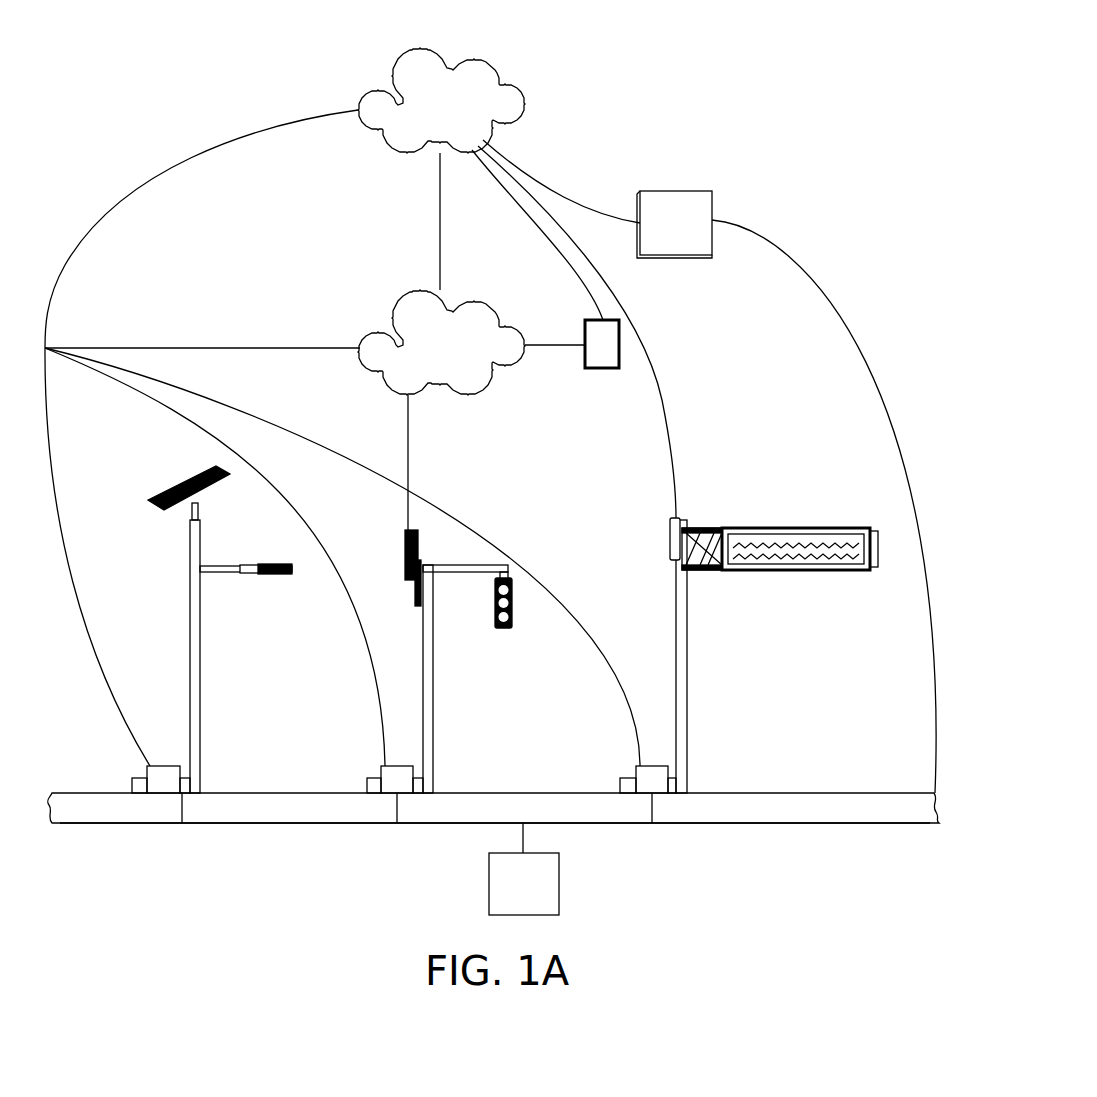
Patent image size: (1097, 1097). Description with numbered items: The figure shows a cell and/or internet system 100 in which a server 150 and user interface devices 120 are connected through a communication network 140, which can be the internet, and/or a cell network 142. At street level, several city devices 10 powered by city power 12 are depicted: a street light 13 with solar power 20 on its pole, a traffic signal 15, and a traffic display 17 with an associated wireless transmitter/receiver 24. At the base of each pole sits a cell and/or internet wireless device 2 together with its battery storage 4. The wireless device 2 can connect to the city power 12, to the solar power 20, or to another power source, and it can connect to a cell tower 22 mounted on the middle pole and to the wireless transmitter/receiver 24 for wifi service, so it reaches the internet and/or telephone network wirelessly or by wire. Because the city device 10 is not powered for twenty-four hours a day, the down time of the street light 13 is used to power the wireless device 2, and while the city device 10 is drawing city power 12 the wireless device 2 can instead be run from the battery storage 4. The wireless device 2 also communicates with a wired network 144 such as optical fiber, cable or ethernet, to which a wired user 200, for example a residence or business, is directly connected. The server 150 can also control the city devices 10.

The cell and/or internet system 100 is at (672, 74).
The communication network 140 is at (458, 118).
The cell network 142 is at (458, 361).
The server 150 is at (675, 190).
The user interface device 120 is at (603, 369).
The wired user 200 is at (489, 881).
The city power 12 is at (72, 790).
The wired network 144 is at (125, 826).
The city device 10 is at (190, 622).
The solar power 20 is at (158, 495).
The street light 13 is at (277, 574).
The cell tower 22 is at (405, 554).
The traffic signal 15 is at (506, 630).
The wireless transmitter/receiver 24 is at (668, 538).
The traffic display 17 is at (795, 527).
The cell and/or internet wireless device 2 is at (158, 765).
The battery storage 4 is at (132, 787).